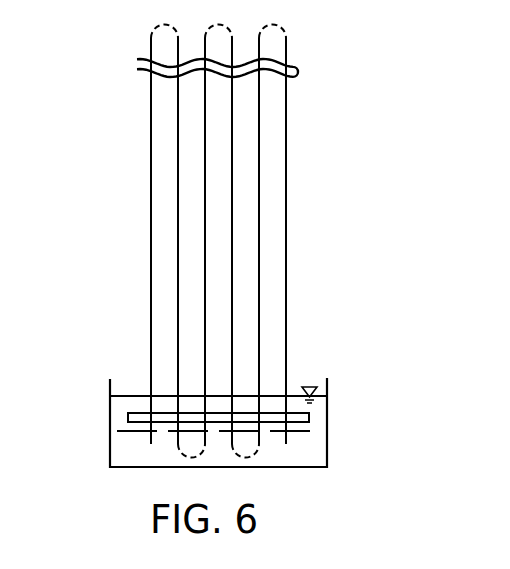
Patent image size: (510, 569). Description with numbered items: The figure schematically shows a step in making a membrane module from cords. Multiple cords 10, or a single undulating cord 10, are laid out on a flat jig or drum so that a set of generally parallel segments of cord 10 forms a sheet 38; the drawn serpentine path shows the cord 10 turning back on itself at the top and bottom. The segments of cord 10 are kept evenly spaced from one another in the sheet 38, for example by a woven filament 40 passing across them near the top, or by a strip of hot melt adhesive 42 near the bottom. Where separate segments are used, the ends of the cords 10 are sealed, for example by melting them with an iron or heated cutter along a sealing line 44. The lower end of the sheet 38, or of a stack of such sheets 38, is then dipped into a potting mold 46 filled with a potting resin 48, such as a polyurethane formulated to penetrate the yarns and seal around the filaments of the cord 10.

The sheet 38 is at (122, 196).
The cord 10 is at (287, 178).
The woven filament 40 is at (297, 68).
The strip of hot melt adhesive 42 is at (133, 413).
The sealing line 44 is at (300, 432).
The potting mold 46 is at (110, 452).
The potting resin 48 is at (127, 418).